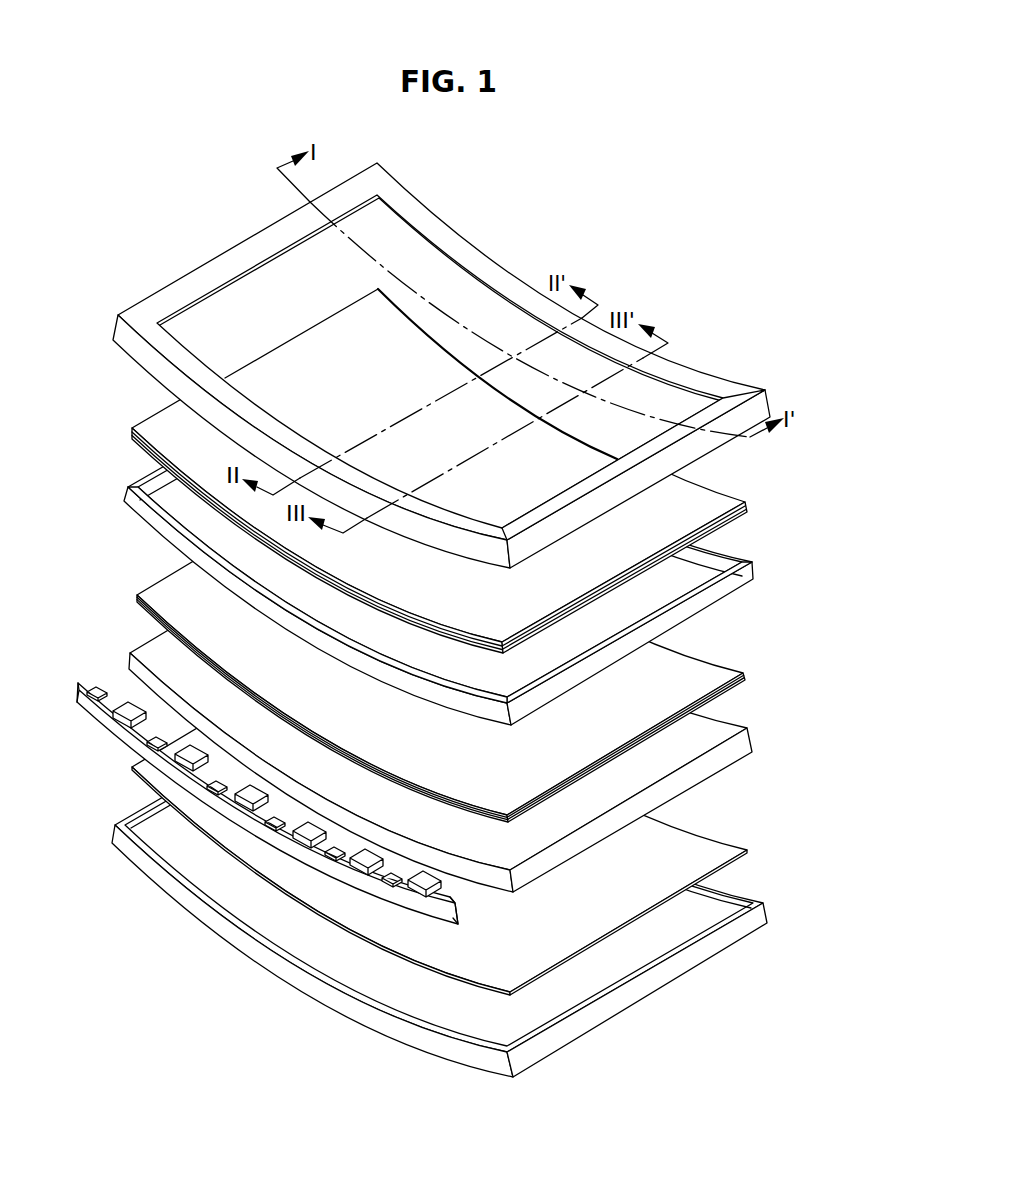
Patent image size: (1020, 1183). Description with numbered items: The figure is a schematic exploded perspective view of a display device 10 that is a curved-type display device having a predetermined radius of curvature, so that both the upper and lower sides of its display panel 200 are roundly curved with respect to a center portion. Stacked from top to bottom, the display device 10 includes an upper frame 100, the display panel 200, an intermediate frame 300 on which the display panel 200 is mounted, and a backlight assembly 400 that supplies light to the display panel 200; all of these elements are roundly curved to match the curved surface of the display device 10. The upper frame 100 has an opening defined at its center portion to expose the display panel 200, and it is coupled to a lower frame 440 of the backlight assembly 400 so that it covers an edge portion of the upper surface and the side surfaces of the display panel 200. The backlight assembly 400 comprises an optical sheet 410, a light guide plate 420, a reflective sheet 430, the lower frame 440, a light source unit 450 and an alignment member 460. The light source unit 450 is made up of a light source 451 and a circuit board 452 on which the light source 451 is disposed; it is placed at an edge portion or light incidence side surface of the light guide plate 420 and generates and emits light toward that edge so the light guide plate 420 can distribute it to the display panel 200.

The display device 10 is at (673, 254).
The upper frame 100 is at (693, 448).
The display panel 200 is at (695, 520).
The intermediate frame 300 is at (748, 577).
The backlight assembly 400 is at (442, 772).
The optical sheet 410 is at (710, 673).
The light guide plate 420 is at (707, 727).
The reflective sheet 430 is at (733, 850).
The lower frame 440 is at (758, 920).
The light source unit 450 is at (249, 755).
The light source 451 is at (105, 690).
The circuit board 452 is at (78, 697).
The alignment member 460 is at (117, 707).